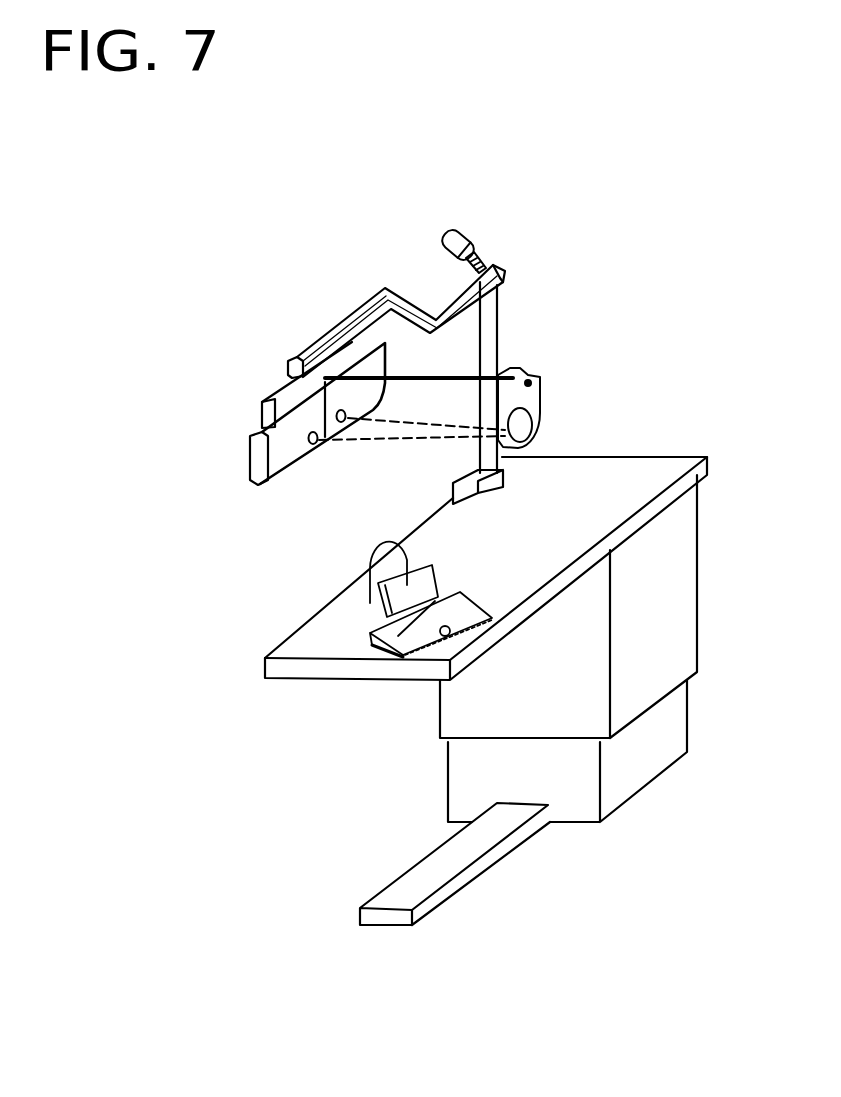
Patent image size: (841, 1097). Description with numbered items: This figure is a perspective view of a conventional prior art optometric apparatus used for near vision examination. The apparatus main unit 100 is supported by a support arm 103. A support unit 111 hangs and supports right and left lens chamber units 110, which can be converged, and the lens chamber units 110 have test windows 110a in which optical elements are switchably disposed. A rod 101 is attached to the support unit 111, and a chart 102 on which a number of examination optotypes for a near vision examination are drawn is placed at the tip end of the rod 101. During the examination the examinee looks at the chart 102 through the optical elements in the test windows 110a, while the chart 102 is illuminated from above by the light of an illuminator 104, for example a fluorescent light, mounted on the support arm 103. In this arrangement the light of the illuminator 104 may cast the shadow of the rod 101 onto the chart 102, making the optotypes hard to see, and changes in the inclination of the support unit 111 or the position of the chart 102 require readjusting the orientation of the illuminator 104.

The apparatus main unit 100 is at (246, 320).
The rod 101 is at (455, 375).
The chart 102 is at (545, 384).
The support arm 103 is at (368, 290).
The illuminator 104 is at (463, 222).
The lens chamber units 110 is at (264, 490).
The test windows 110a is at (312, 444).
The support unit 111 is at (258, 404).